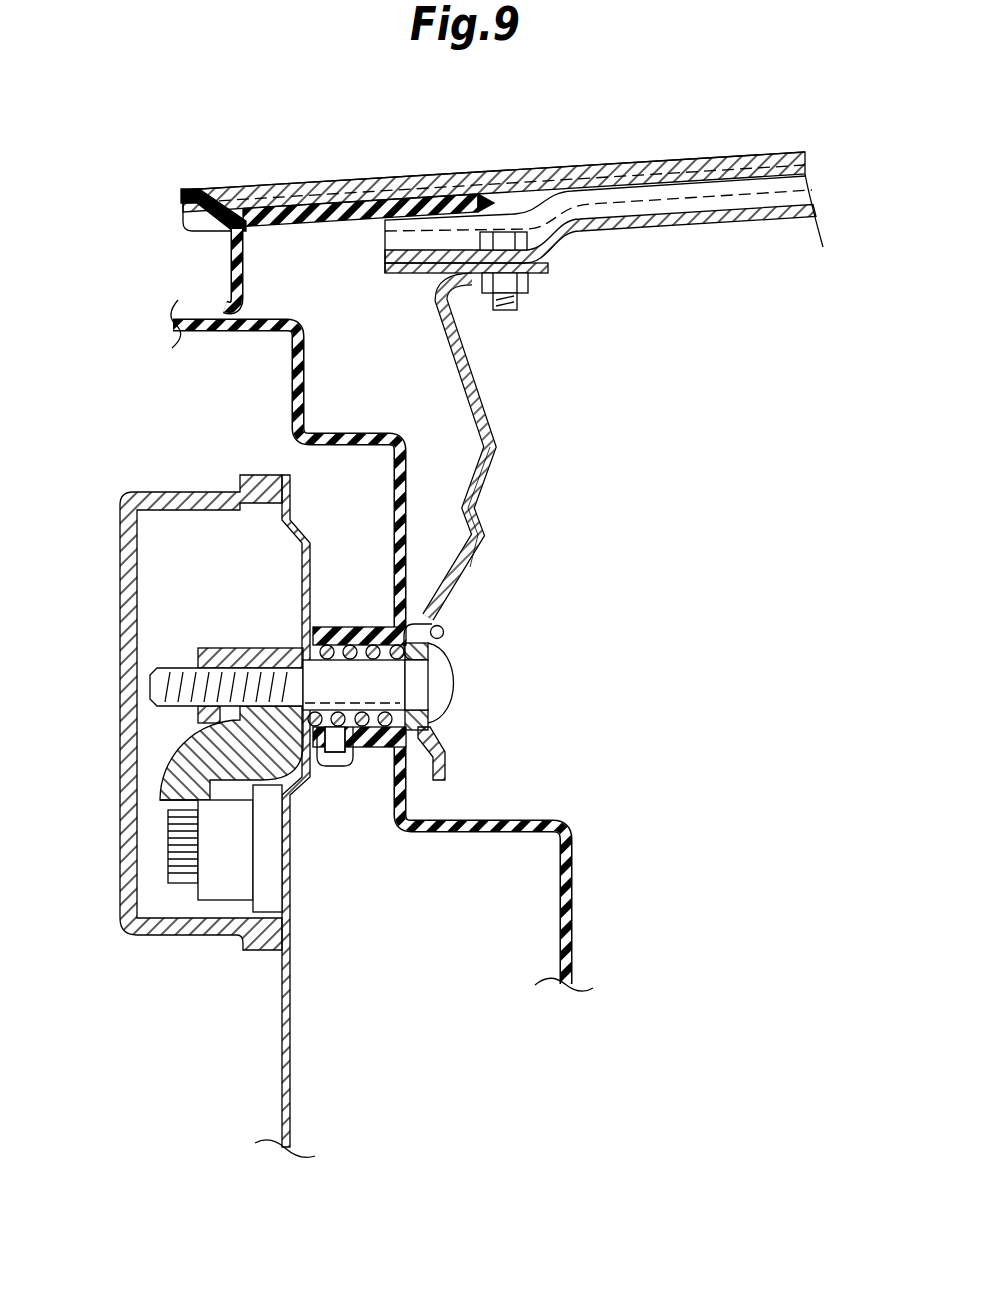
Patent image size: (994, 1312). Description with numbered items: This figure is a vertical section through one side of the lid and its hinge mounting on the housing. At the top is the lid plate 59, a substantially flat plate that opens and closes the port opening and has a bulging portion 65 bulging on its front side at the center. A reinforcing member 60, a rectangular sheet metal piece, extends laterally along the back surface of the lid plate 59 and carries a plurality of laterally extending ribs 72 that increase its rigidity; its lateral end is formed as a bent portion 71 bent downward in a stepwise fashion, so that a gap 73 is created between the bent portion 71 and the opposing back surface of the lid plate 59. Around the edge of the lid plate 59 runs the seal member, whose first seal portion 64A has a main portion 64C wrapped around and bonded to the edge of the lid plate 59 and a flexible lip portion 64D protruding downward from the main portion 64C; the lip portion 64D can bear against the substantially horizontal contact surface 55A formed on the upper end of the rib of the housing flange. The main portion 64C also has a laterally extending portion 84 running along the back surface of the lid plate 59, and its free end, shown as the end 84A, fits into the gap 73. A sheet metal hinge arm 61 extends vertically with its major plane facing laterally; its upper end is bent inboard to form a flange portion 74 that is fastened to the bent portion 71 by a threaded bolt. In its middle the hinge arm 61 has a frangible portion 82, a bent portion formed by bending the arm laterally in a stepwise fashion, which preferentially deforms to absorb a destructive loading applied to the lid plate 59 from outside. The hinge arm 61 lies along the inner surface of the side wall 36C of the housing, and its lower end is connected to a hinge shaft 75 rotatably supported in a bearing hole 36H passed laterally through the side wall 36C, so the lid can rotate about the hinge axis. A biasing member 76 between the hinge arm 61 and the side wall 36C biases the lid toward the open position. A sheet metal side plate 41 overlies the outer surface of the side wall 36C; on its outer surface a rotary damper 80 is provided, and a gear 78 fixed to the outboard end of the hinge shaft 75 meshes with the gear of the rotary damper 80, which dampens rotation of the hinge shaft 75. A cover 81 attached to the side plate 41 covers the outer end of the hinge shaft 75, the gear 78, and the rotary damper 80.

The first seal portion 64A is at (190, 183).
The main portion 64C is at (187, 207).
The lip portion 64D is at (232, 253).
The laterally extending portion 84 is at (321, 210).
The end portion of roof side member 84A is at (470, 207).
The bent portion 71 is at (428, 240).
The gap 73 is at (521, 204).
The lid plate 59 is at (598, 172).
The bulging portion 65 is at (710, 162).
The reinforcing member 60 is at (658, 205).
The rib 72 is at (757, 222).
The flange portion 74 is at (545, 271).
The contact surface 55A is at (185, 318).
The hinge arm 61 is at (492, 446).
The frangible portion 82 is at (470, 567).
The biasing member 76 is at (444, 629).
The hinge shaft 75 is at (392, 683).
The cover 81 is at (124, 588).
The gear 78 is at (187, 767).
The rotary damper 80 is at (220, 837).
The side wall 36C is at (517, 820).
The bearing hole 36H is at (365, 742).
The side plate 41 is at (287, 1000).